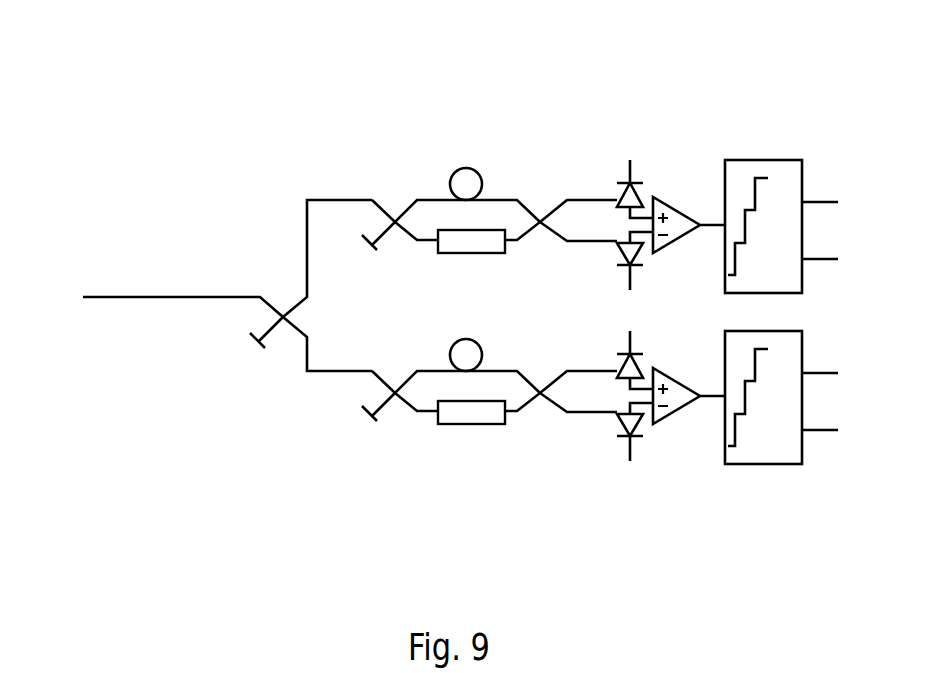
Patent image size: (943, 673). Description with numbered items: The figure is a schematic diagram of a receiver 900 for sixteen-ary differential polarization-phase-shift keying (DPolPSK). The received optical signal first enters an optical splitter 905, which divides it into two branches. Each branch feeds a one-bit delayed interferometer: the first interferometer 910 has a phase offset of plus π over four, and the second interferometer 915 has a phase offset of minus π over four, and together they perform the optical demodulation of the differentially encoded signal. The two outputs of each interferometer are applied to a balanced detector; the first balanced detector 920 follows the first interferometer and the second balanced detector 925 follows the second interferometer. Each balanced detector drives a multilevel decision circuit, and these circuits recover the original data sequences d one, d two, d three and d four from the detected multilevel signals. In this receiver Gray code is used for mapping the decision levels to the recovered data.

The 16-ary DPolPSK receiver 900 is at (193, 151).
The optical splitter 905 is at (279, 353).
The one-bit delayed interferometer 910 is at (435, 162).
The one-bit delayed interferometer 915 is at (387, 444).
The balanced detector 920 is at (653, 170).
The balanced detector 925 is at (587, 353).